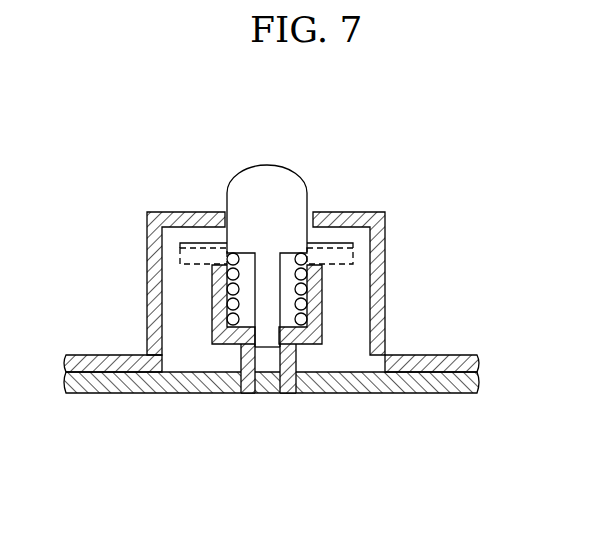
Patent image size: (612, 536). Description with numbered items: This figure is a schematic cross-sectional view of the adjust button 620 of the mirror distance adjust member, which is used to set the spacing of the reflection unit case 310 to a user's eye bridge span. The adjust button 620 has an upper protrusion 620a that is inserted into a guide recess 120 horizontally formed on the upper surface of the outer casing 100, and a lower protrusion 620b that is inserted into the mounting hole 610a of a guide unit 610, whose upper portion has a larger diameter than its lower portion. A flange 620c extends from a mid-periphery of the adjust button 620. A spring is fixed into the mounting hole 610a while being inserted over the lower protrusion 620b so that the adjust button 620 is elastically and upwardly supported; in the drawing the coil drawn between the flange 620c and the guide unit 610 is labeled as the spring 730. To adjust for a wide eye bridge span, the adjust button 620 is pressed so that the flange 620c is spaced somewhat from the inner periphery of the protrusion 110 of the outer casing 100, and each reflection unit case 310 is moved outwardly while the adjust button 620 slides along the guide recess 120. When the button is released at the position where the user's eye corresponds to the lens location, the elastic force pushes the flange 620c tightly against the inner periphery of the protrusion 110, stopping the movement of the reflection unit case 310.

The outer casing 100 is at (112, 354).
The protrusion 110 is at (147, 247).
The guide recess 120 is at (225, 212).
The reflection unit case 310 is at (384, 386).
The guide unit 610 is at (215, 328).
The mounting hole 610a is at (246, 318).
The adjust button 620 is at (304, 168).
The upper protrusion 620a is at (300, 193).
The lower protrusion 620b is at (268, 343).
The flange 620c is at (347, 236).
The spring 730 is at (307, 288).